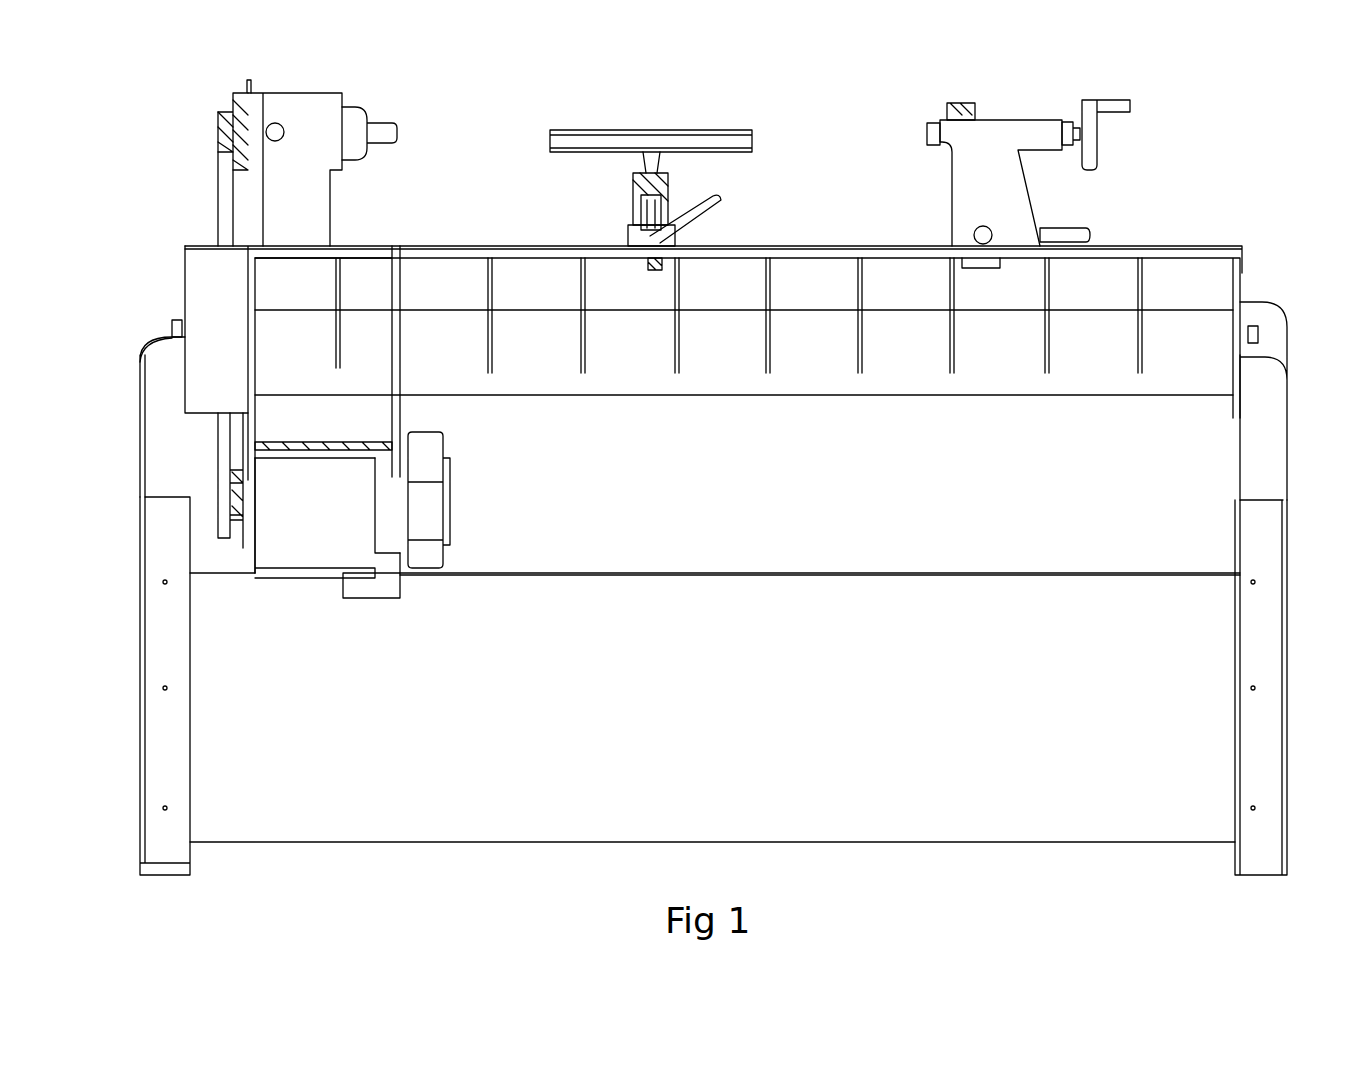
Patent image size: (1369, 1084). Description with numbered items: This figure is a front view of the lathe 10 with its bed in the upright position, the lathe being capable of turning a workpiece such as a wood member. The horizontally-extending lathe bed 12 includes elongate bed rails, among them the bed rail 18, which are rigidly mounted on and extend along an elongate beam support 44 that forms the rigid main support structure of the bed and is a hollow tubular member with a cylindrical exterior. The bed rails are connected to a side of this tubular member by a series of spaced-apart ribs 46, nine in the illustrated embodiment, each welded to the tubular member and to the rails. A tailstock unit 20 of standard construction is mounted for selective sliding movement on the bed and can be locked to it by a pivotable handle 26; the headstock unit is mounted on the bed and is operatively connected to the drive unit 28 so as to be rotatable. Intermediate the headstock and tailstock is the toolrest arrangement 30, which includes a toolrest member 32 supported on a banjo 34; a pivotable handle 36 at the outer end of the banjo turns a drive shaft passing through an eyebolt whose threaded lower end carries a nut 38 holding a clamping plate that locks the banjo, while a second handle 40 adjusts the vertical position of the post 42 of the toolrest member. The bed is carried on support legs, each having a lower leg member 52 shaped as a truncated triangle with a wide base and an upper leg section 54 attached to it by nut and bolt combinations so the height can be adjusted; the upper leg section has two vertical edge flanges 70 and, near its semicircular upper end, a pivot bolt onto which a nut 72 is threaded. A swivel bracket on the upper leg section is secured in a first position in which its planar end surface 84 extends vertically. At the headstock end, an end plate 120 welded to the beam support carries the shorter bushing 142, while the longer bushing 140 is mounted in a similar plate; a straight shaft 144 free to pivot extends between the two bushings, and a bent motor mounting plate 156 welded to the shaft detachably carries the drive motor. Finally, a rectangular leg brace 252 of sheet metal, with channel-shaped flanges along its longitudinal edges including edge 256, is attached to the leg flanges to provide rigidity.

The lathe 10 is at (1130, 174).
The lathe bed 12 is at (820, 246).
The bed rail 18 is at (878, 246).
The tailstock unit 20 is at (957, 176).
The pivotable handle 26 is at (352, 115).
The drive unit 28 is at (432, 555).
The toolrest arrangement 30 is at (668, 195).
The toolrest member 32 is at (712, 130).
The banjo 34 is at (633, 207).
The pivotable handle 36 is at (690, 226).
The nut 38 is at (655, 270).
The second handle 40 is at (636, 215).
The post 42 is at (640, 160).
The beam support 44 is at (808, 357).
The ribs 46 is at (862, 348).
The lower leg member 52 is at (165, 738).
The upper leg section 54 is at (160, 433).
The edge flanges 70 is at (160, 363).
The nut 72 is at (178, 320).
The planar end surface 84 is at (212, 268).
The end plate 120 is at (258, 354).
The longer bushing 140 is at (405, 432).
The shorter bushing 142 is at (258, 428).
The straight shaft 144 is at (334, 458).
The bent motor mounting plate 156 is at (318, 550).
The rectangular leg brace 252 is at (712, 622).
The longitudinal edge 256 is at (768, 840).